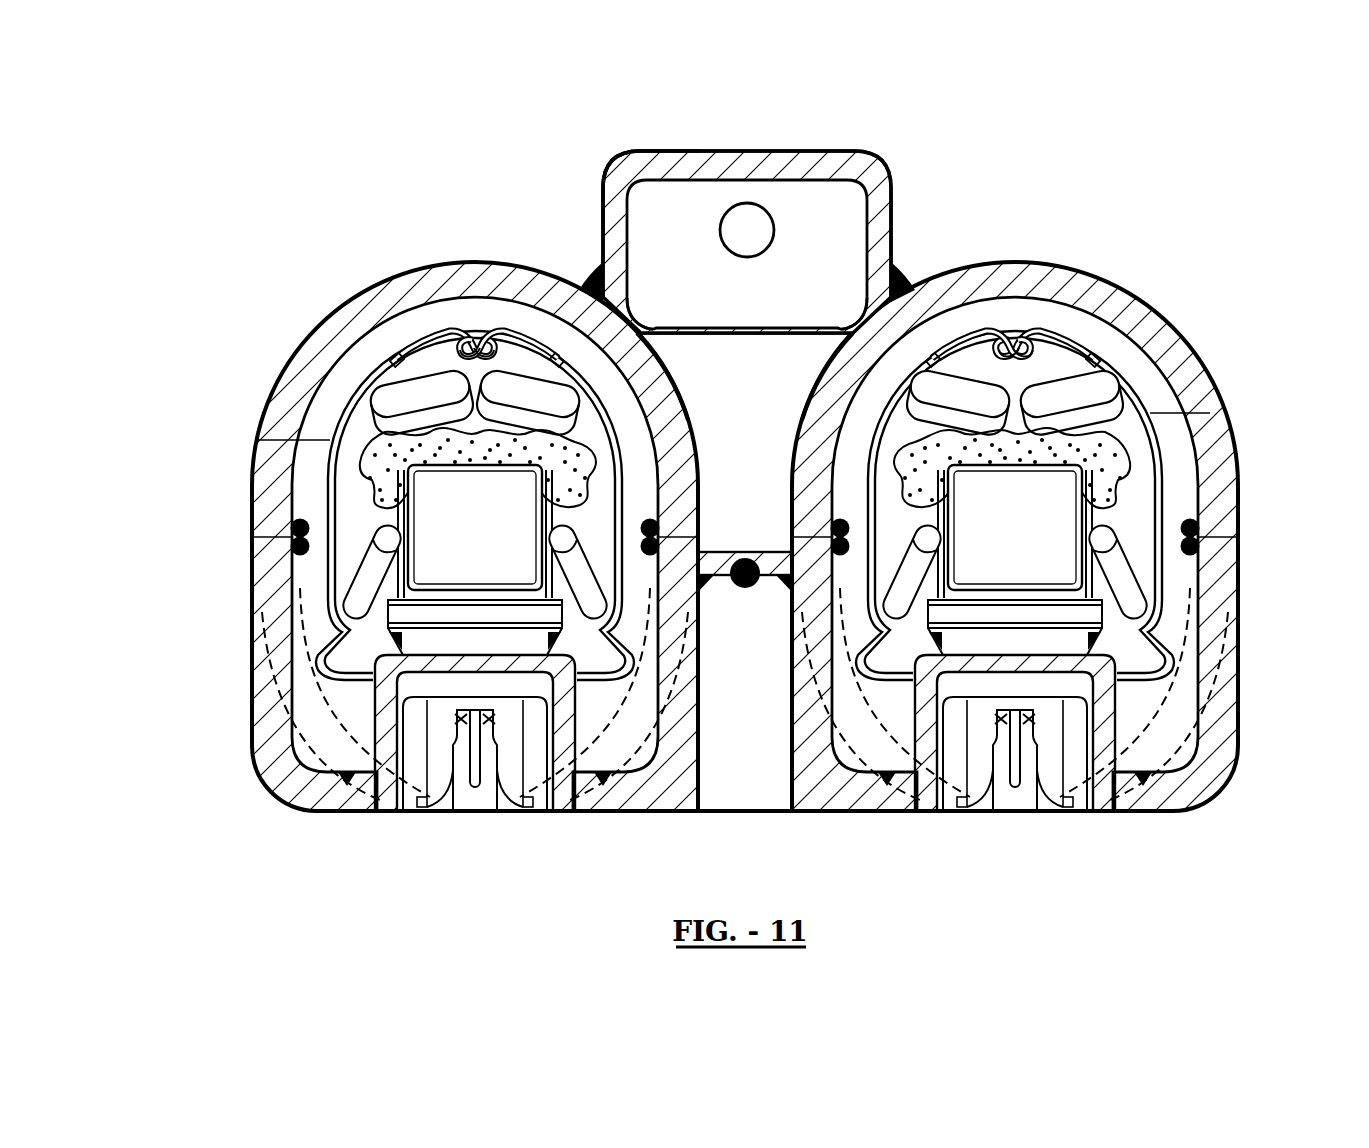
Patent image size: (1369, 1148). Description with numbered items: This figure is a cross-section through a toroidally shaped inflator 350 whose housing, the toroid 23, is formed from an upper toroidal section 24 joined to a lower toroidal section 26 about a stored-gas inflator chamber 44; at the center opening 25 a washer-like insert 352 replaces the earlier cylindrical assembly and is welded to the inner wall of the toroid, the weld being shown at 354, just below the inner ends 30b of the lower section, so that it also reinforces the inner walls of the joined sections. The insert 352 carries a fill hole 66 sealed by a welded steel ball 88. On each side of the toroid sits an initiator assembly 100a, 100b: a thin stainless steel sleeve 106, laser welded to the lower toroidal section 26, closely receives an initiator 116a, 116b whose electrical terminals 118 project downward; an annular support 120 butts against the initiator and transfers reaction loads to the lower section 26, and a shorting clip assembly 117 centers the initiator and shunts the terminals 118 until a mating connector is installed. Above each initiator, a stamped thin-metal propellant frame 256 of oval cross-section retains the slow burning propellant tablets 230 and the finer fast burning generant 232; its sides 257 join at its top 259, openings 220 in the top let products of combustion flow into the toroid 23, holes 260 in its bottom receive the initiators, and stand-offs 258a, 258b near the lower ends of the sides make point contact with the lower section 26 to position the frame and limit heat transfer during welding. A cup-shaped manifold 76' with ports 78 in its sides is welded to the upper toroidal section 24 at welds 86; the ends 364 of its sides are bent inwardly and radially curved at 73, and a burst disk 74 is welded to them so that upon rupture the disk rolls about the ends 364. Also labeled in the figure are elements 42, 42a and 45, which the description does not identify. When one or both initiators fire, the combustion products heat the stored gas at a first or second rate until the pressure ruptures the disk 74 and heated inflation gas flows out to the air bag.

The toroid 23 is at (271, 378).
The upper toroidal section 24 is at (262, 516).
The center opening 25 is at (699, 686).
The lower toroidal section 26 is at (265, 590).
The inner ends 30b is at (817, 537).
The O-ring seal 42 is at (645, 520).
The O-ring seal 42a is at (1197, 505).
The inflator chamber 44 is at (782, 404).
The housing arc wall 45 is at (670, 420).
The fill hole 66 is at (742, 552).
The radially curved portion 73 is at (837, 321).
The burst disk 74 is at (733, 330).
The manifold 76' is at (747, 209).
The ports 78 is at (615, 212).
The welds 86 is at (905, 265).
The steel ball 88 is at (745, 590).
The initiator assembly 100a is at (981, 704).
The initiator assembly 100b is at (445, 692).
The sleeve 106 is at (410, 493).
The initiator 116a is at (1000, 556).
The initiator 116b is at (520, 553).
The shorting clip assembly 117 is at (1075, 783).
The electrical terminals 118 is at (478, 775).
The annular support 120 is at (1102, 762).
The openings 220 is at (393, 358).
The slow burning generant 230 is at (1113, 393).
The fast burning generant 232 is at (1210, 413).
The propellant frame 256 is at (368, 392).
The sides 257 is at (292, 441).
The stand-off 258a is at (305, 632).
The stand-off 258b is at (592, 682).
The top 259 is at (452, 332).
The holes 260 is at (378, 640).
The inflator 350 is at (904, 120).
The washer-like insert 352 is at (713, 550).
The weld 354 is at (783, 583).
The ends 364 is at (643, 314).